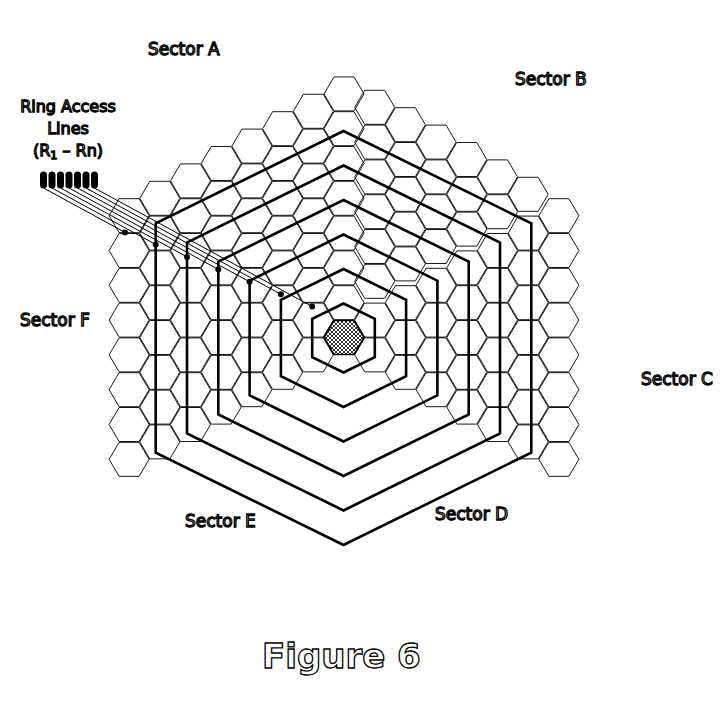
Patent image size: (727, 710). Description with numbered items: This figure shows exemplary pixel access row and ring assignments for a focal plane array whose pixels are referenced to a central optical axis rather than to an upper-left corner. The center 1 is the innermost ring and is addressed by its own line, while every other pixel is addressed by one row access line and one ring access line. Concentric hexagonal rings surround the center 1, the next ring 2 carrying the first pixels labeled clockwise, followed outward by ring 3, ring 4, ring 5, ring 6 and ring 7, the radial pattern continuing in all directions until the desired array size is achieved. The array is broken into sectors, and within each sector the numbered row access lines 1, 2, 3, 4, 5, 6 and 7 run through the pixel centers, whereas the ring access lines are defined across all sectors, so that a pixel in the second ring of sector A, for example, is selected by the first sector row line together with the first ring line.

The center pixel 1 is at (622, 490).
The second ring and row access line 2 is at (559, 424).
The third ring and row access line 3 is at (559, 390).
The fourth ring and row access line 4 is at (559, 355).
The fifth ring and row access line 5 is at (559, 320).
The sixth ring and row access line 6 is at (559, 285).
The seventh ring and row access line 7 is at (559, 250).